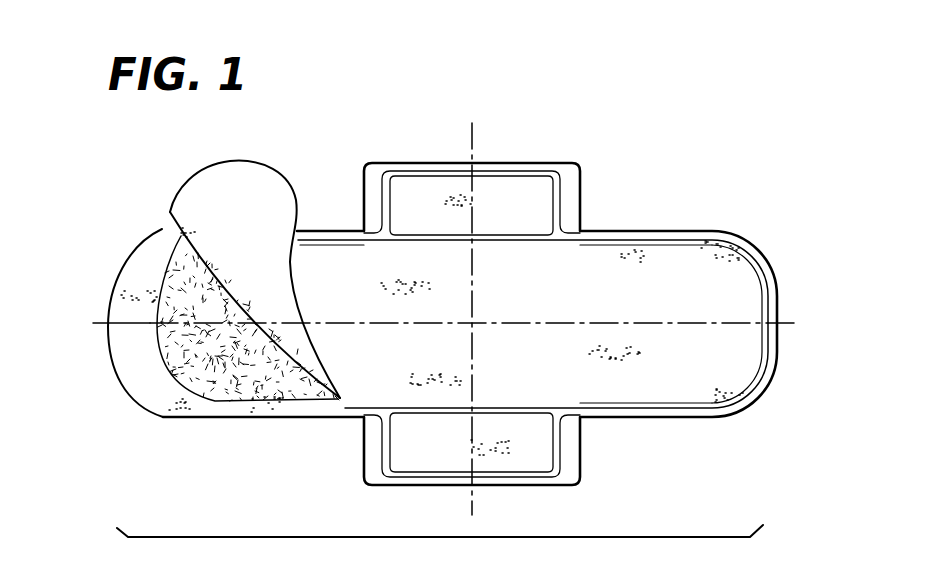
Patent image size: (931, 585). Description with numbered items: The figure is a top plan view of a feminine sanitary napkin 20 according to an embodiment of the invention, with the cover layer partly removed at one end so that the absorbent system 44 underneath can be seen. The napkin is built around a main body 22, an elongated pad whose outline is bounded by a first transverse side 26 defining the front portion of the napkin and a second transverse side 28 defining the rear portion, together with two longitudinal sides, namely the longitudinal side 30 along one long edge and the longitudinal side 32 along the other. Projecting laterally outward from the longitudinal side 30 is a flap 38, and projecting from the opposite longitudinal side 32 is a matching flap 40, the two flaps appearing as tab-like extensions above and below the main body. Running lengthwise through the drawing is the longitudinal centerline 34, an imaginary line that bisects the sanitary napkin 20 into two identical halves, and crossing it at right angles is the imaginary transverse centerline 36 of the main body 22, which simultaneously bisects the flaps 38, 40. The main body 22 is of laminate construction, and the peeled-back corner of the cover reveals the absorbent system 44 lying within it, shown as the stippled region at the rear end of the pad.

The feminine sanitary napkin 20 is at (661, 109).
The main body 22 is at (452, 540).
The first transverse side 26 is at (758, 263).
The second transverse side 28 is at (118, 272).
The longitudinal side 30 is at (663, 230).
The longitudinal side 32 is at (680, 418).
The longitudinal centerline 34 is at (93, 323).
The transverse centerline 36 is at (472, 132).
The flap 38 is at (584, 171).
The flap 40 is at (582, 467).
The absorbent system 44 is at (238, 392).